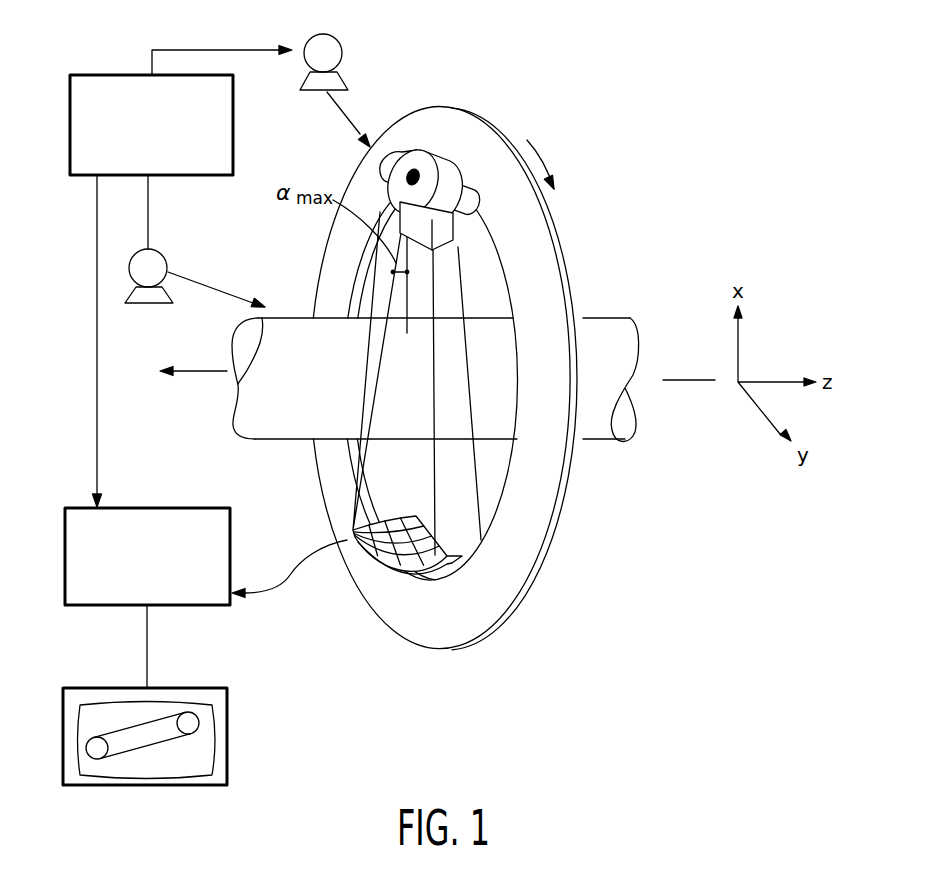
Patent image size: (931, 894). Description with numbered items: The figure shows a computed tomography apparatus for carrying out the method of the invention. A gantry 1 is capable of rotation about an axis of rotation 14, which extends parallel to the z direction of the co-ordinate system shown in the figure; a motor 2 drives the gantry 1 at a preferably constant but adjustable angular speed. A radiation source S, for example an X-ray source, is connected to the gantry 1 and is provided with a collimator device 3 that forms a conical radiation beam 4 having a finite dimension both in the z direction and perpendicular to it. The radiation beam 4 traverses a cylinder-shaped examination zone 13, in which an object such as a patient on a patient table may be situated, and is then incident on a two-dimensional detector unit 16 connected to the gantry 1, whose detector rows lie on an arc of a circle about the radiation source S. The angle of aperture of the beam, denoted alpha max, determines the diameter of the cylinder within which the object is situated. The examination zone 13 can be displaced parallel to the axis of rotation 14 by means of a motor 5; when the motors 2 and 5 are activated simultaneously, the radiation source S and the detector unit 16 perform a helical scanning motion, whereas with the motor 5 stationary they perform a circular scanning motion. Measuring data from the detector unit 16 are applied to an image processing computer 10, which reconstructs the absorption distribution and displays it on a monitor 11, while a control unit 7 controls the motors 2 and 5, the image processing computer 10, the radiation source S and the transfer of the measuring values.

The gantry 1 is at (560, 513).
The motor 2 is at (343, 52).
The collimator device 3 is at (460, 234).
The radiation beam 4 is at (437, 458).
The motor 5 is at (165, 252).
The control unit 7 is at (107, 75).
The image processing computer 10 is at (109, 597).
The monitor 11 is at (228, 763).
The examination zone 13 is at (297, 333).
The axis of rotation 14 is at (195, 371).
The detector unit 16 is at (370, 573).
The radiation source S is at (437, 165).